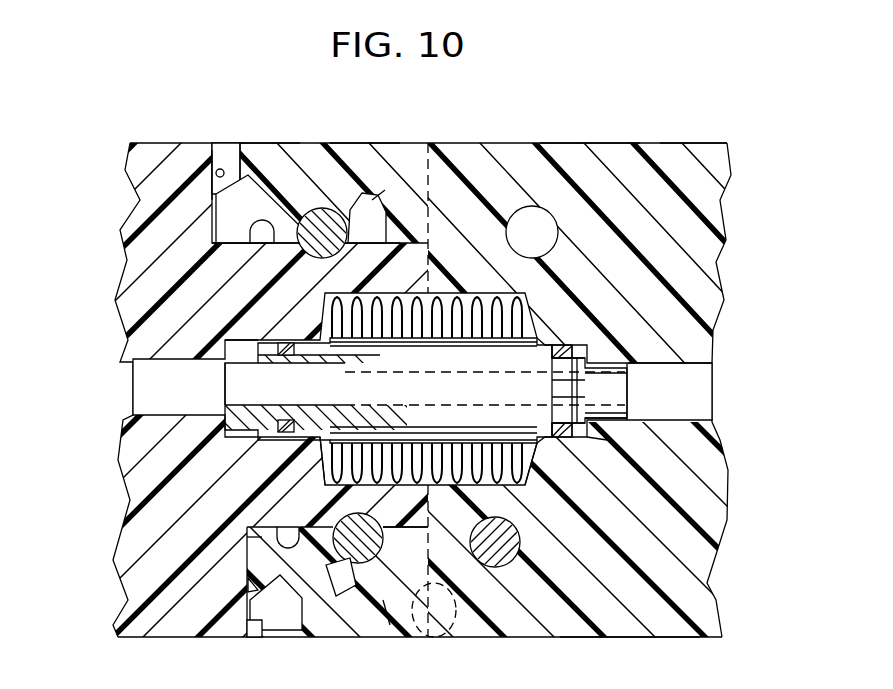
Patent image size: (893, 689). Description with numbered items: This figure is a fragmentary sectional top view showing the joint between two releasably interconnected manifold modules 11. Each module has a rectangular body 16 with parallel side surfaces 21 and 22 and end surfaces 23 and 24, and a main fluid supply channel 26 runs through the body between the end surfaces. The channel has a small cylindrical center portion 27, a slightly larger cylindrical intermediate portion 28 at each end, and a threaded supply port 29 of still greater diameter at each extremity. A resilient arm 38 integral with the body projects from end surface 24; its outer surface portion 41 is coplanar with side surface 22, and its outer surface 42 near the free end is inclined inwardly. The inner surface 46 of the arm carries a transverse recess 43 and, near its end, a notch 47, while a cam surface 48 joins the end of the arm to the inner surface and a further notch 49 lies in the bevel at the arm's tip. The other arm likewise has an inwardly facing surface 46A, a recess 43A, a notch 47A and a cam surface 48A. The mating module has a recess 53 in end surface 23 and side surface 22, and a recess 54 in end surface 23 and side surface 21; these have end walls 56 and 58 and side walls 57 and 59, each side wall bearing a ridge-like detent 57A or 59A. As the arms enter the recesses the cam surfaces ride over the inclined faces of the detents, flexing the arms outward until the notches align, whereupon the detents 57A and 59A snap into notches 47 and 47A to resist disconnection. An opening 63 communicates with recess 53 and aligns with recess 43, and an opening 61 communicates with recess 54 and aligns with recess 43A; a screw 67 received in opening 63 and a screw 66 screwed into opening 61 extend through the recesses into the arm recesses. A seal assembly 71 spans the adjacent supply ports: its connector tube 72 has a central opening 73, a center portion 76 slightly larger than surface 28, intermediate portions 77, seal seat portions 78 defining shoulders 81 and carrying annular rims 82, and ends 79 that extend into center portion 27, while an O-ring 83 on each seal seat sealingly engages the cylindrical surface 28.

The manifold module 11 is at (118, 229).
The body 16 is at (685, 168).
The side surface 21 is at (640, 637).
The side surface 22 is at (590, 143).
The end surface 23 is at (460, 637).
The end surface 24 is at (422, 648).
The main fluid supply channel 26 is at (686, 404).
The center portion 27 is at (716, 362).
The intermediate portion 28 is at (587, 438).
The supply port 29 is at (483, 472).
The resilient arm 38 is at (297, 150).
The outer surface portion 41 is at (360, 143).
The outer surface 42 is at (262, 143).
The recess 43 is at (375, 222).
The recess 43A is at (345, 580).
The inner surface 46 is at (242, 252).
The inwardly facing surface 46A is at (330, 458).
The notch 47 is at (286, 200).
The notch 47A is at (278, 553).
The cam surface 48 is at (210, 248).
The cam surface 48A is at (247, 538).
The notch 49 is at (218, 140).
The recess 53 is at (228, 146).
The recess 54 is at (258, 630).
The end wall 56 is at (212, 160).
The side wall 57 is at (368, 245).
The detent 57A is at (252, 250).
The end wall 58 is at (247, 632).
The side wall 59 is at (394, 535).
The detent 59A is at (268, 508).
The opening 61 is at (384, 626).
The opening 63 is at (322, 207).
The screw 66 is at (365, 563).
The screw 67 is at (372, 186).
The seal assembly 71 is at (530, 331).
The connector tube 72 is at (456, 330).
The central opening 73 is at (225, 390).
The center portion 76 is at (517, 425).
The intermediate portion 77 is at (545, 358).
The seal seat portion 78 is at (578, 392).
The end 79 is at (617, 394).
The annular shoulder 81 is at (560, 392).
The annular rim 82 is at (606, 422).
The O-ring 83 is at (558, 438).